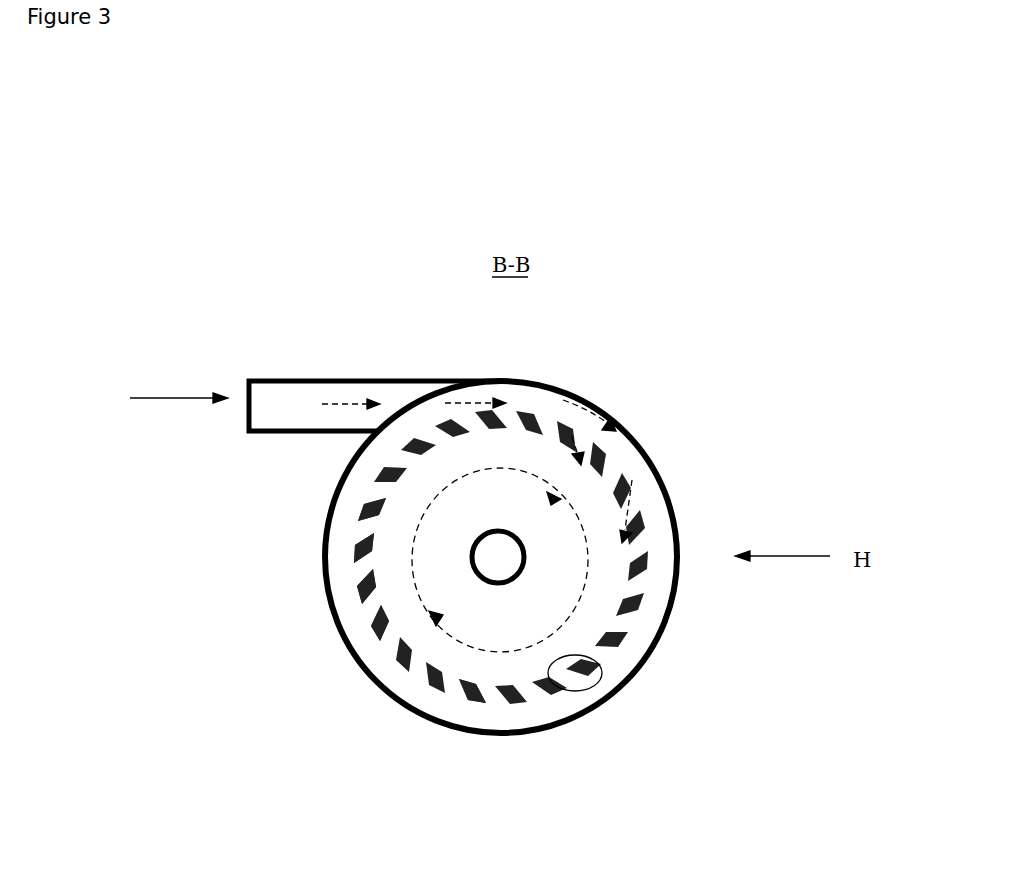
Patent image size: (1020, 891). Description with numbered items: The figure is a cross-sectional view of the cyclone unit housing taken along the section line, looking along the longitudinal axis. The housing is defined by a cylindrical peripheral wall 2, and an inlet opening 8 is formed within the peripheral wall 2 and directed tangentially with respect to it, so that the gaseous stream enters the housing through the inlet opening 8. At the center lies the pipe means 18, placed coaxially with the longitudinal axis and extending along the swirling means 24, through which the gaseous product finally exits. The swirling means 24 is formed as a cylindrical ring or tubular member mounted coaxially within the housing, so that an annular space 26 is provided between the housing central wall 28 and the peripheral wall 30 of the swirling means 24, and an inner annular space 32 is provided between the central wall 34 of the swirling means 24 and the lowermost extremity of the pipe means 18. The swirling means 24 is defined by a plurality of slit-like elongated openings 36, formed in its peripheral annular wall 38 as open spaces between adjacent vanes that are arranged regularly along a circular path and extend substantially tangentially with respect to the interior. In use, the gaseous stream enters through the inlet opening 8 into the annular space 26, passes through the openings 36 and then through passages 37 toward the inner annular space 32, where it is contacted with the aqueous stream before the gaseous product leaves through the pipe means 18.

The cylindrical peripheral wall 2 is at (598, 708).
The inlet opening 8 is at (318, 396).
The pipe means 18 is at (512, 588).
The swirling means 24 is at (348, 600).
The annular space 26 is at (378, 656).
The housing central wall 28 is at (322, 542).
The peripheral wall of the swirling means 30 is at (375, 625).
The inner annular space 32 is at (497, 656).
The central wall of the swirling means 34 is at (360, 505).
The openings 36 is at (492, 660).
The passages 37 is at (525, 422).
The peripheral annular wall 38 is at (602, 673).